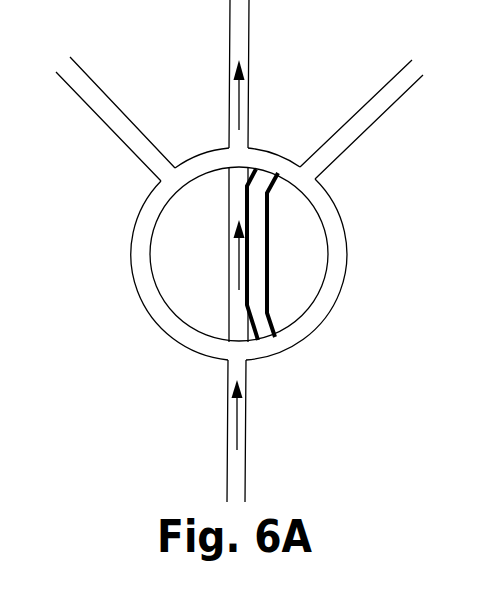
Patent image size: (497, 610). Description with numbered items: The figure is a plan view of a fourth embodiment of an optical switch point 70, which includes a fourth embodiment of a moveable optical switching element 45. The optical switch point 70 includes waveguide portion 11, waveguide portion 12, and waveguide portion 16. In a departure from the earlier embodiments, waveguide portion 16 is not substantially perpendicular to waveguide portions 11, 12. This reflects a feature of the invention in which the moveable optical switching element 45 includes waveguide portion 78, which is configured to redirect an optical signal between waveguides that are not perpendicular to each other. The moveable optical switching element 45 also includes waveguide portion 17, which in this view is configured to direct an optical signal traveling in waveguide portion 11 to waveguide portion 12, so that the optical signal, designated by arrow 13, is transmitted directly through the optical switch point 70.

The optical switch point 70 is at (158, 48).
The moveable optical switching element 45 is at (158, 211).
The waveguide portion 12 is at (248, 25).
The waveguide portion 16 is at (357, 138).
The waveguide portion 17 is at (228, 293).
The waveguide portion 78 is at (268, 312).
The waveguide portion 11 is at (246, 380).
The arrow 13 is at (237, 415).